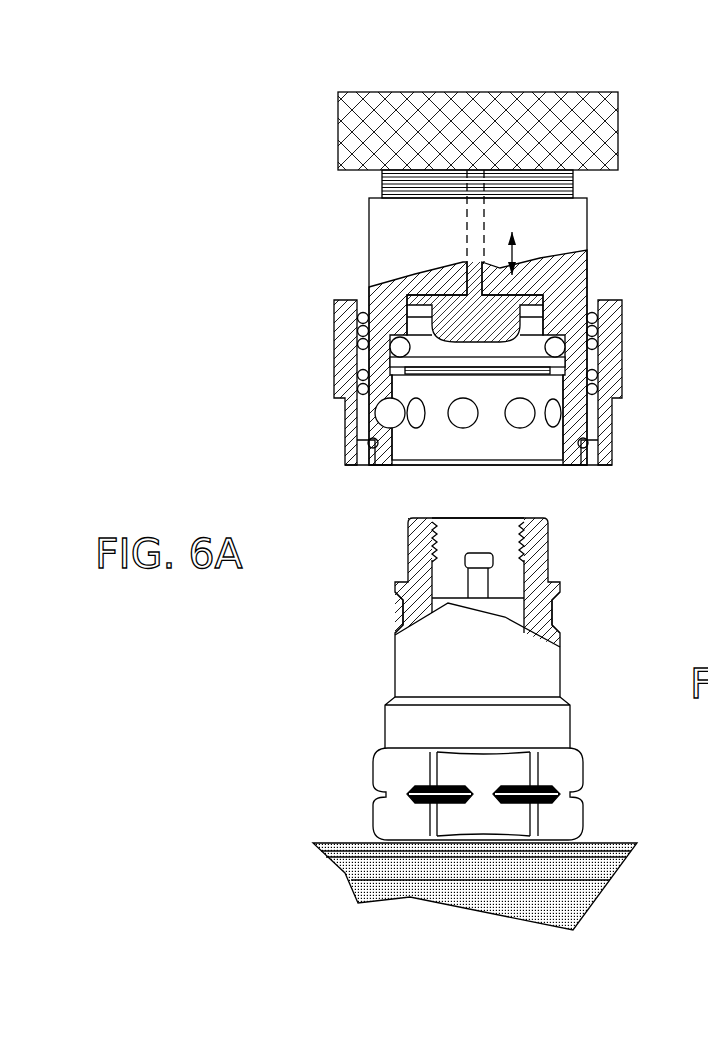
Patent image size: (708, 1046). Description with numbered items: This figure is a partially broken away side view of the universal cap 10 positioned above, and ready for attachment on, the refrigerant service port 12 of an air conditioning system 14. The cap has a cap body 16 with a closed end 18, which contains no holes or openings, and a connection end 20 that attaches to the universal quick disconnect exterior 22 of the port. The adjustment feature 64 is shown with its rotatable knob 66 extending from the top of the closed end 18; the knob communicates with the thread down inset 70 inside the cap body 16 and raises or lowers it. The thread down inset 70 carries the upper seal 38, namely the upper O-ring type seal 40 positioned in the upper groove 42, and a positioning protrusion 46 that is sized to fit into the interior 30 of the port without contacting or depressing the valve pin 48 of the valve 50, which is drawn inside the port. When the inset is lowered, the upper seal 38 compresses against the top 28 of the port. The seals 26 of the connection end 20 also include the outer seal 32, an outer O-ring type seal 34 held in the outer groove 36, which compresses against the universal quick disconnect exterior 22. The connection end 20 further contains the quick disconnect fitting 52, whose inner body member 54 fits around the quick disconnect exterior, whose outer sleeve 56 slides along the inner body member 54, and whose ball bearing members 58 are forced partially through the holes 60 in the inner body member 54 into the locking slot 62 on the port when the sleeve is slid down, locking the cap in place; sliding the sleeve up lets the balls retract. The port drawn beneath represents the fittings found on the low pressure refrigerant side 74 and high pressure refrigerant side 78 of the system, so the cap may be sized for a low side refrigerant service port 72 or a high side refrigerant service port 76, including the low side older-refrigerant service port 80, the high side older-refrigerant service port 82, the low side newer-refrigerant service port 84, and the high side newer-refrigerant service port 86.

The universal cap 10 is at (461, 151).
The refrigerant service port 12 is at (404, 767).
The air conditioning system 14 is at (440, 900).
The cap body 16 is at (455, 351).
The closed end 18 is at (521, 106).
The connection end 20 is at (461, 443).
The universal quick disconnect exterior 22 is at (445, 583).
The seal 26 is at (464, 387).
The top 28 is at (535, 522).
The interior 30 is at (450, 522).
The outer seal 32 is at (380, 306).
The outer O-ring type seal 34 is at (360, 340).
The outer groove 36 is at (400, 347).
The upper seal 38 is at (402, 268).
The upper O-ring type seal 40 is at (383, 312).
The upper groove 42 is at (420, 307).
The positioning protrusion 46 is at (476, 310).
The valve pin 48 is at (463, 560).
The valve 50 is at (445, 590).
The quick disconnect fitting 52 is at (320, 420).
The inner body member 54 is at (372, 462).
The outer sleeve 56 is at (605, 425).
The ball bearing members 58 is at (417, 425).
The holes 60 is at (545, 405).
The locking slot 62 is at (395, 608).
The adjustment feature 64 is at (303, 196).
The rotatable knob 66 is at (603, 109).
The thread down inset 70 is at (467, 203).
The low side refrigerant service port 72 is at (404, 794).
The low pressure refrigerant side 74 is at (475, 900).
The high side refrigerant service port 76 is at (404, 794).
The high pressure refrigerant side 78 is at (505, 905).
The low side HFC-134a refrigerant service port 80 is at (360, 797).
The high side HFC-134a refrigerant service port 82 is at (392, 811).
The low side 1234yf refrigerant service port 84 is at (392, 811).
The high side 1234yf refrigerant service port 86 is at (392, 811).